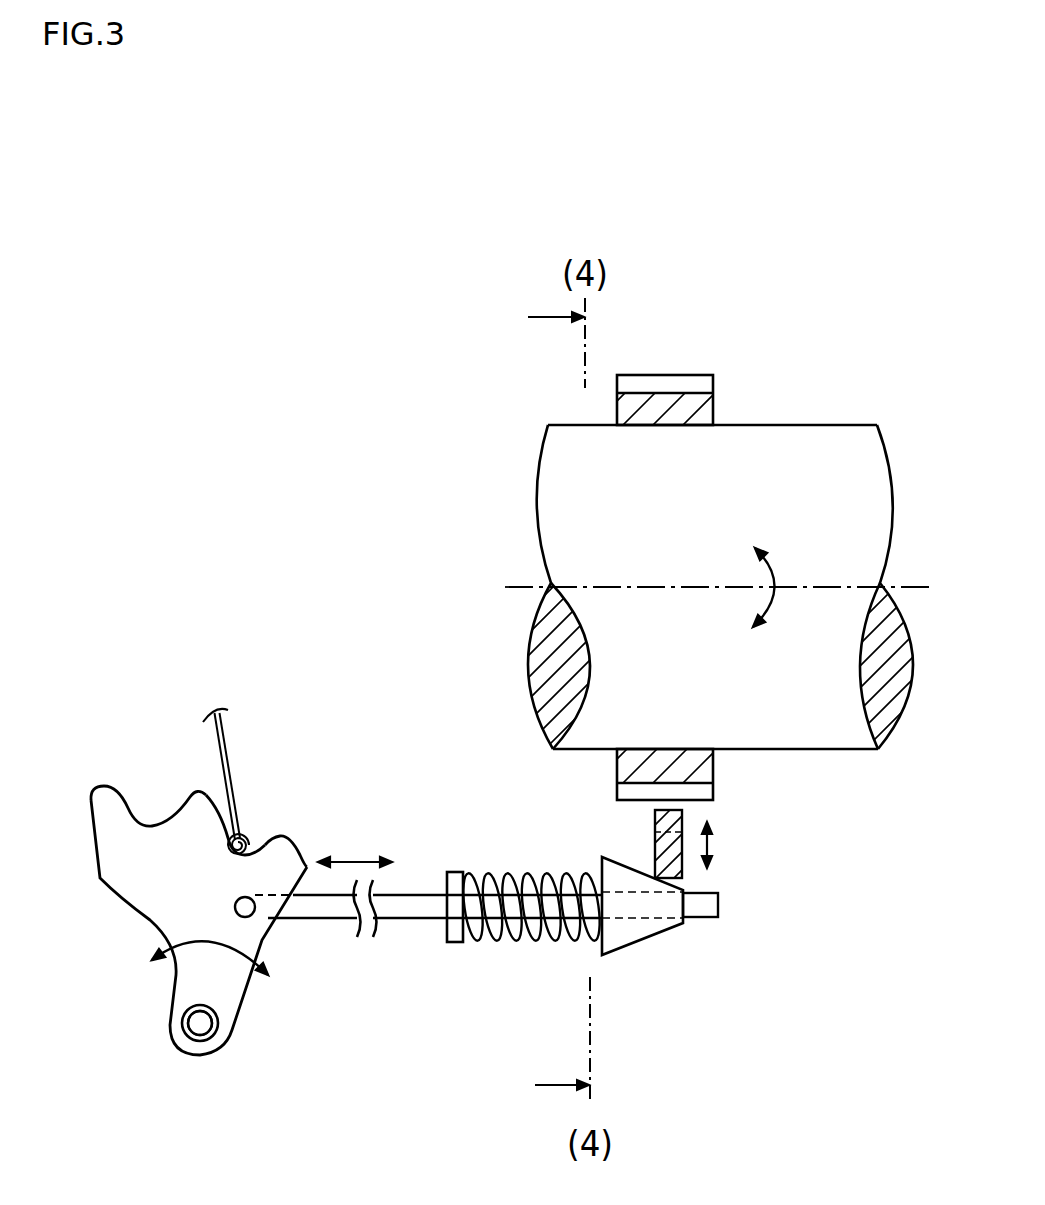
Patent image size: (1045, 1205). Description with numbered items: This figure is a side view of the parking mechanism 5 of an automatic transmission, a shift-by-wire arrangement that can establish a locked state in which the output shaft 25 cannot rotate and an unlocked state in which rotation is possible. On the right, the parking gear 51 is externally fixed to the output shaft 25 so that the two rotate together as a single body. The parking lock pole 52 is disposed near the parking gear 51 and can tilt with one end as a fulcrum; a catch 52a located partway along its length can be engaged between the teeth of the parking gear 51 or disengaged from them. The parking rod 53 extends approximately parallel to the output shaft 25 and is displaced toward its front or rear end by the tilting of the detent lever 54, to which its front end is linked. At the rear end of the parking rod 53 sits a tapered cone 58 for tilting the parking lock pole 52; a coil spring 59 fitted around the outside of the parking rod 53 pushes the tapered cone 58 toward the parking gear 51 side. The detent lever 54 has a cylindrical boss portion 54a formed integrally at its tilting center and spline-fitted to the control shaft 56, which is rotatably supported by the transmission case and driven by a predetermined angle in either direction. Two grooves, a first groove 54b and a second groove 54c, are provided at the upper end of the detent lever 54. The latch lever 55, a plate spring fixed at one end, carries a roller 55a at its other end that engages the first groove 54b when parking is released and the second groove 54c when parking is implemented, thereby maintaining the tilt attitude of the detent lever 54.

The parking mechanism 5 is at (376, 822).
The output shaft 25 is at (795, 443).
The parking gear 51 is at (690, 768).
The parking lock pole 52 is at (683, 878).
The catch 52a is at (677, 815).
The parking rod 53 is at (410, 893).
The detent lever 54 is at (150, 917).
The cylindrical boss portion 54a is at (220, 1007).
The first groove 54b is at (270, 833).
The second groove 54c is at (158, 815).
The latch lever 55 is at (228, 750).
The roller 55a is at (258, 827).
The control shaft 56 is at (198, 1025).
The tapered cone 58 is at (625, 935).
The coil spring 59 is at (540, 933).